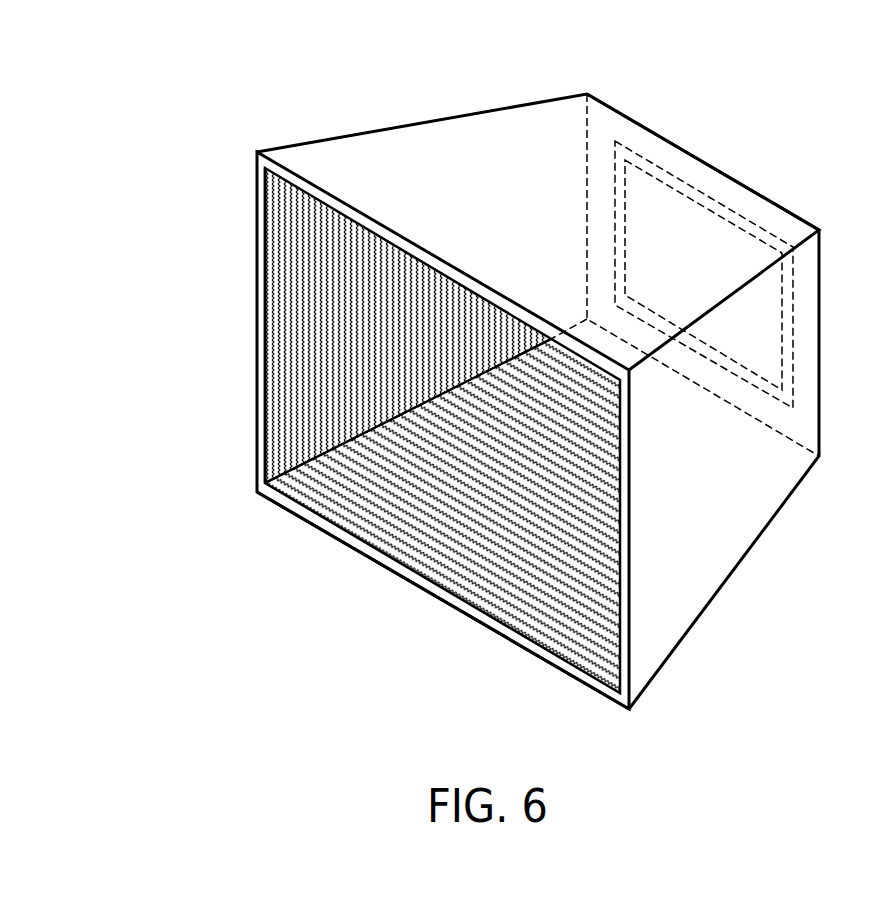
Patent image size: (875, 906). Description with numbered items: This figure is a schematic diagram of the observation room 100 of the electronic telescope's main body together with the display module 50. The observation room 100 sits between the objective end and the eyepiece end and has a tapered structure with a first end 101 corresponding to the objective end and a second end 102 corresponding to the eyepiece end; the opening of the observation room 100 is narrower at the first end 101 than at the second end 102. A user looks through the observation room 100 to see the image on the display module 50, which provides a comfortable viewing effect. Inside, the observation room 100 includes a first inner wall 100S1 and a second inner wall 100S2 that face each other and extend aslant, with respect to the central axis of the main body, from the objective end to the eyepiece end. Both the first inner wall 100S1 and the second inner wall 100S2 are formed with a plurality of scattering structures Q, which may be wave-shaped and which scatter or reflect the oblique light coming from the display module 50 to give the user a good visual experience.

The observation room 100 is at (453, 109).
The first end 101 is at (750, 188).
The display module 50 is at (665, 172).
The first inner wall 100S1 is at (298, 318).
The scattering structures Q is at (295, 432).
The second end 102 is at (440, 603).
The second inner wall 100S2 is at (540, 557).